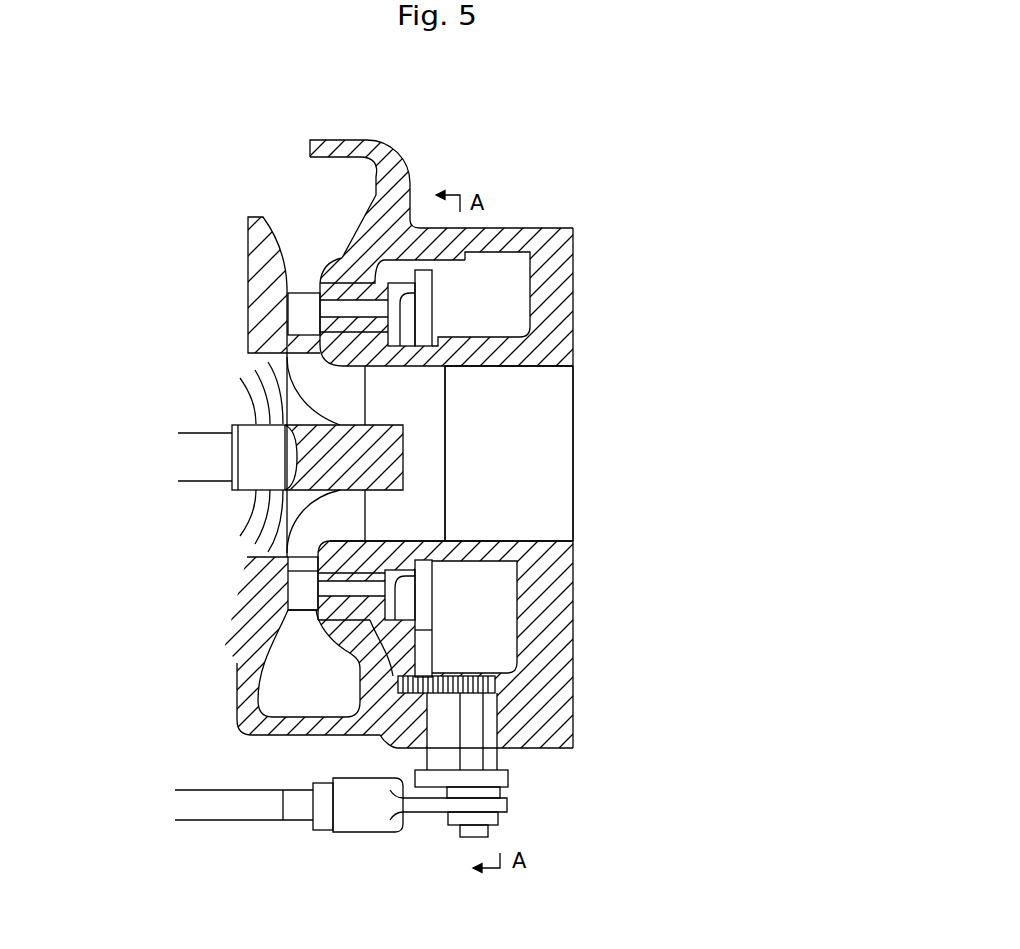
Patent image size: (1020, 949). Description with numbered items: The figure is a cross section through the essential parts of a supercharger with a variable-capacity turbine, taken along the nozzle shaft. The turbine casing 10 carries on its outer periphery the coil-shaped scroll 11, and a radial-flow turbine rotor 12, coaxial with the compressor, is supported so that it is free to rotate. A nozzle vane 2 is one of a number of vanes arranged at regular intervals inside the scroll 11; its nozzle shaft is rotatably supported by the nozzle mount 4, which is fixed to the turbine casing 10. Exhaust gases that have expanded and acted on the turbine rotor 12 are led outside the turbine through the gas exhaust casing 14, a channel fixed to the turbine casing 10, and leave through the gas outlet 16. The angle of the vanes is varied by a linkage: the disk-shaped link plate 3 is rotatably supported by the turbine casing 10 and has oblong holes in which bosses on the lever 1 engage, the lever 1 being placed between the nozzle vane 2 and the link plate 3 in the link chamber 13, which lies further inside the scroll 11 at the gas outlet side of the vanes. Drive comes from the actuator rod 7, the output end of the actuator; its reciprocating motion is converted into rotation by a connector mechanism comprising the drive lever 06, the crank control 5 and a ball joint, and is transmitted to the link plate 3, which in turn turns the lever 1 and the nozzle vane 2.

The scroll 11 is at (333, 172).
The turbine casing 10 is at (371, 140).
The nozzle mount 4 is at (409, 170).
The link chamber 13 is at (500, 268).
The gas exhaust casing 14 is at (550, 302).
The radial-flow turbine rotor 12 is at (340, 417).
The lever 1 is at (445, 523).
The gas outlet 16 is at (540, 520).
The link plate 3 is at (432, 590).
The crank control 5 is at (497, 670).
The drive lever 06 is at (510, 780).
The nozzle vane 2 is at (300, 590).
The actuator rod 7 is at (373, 818).